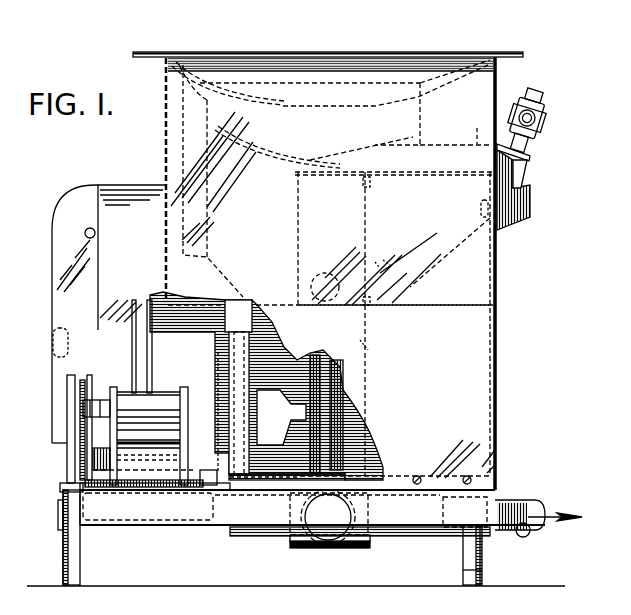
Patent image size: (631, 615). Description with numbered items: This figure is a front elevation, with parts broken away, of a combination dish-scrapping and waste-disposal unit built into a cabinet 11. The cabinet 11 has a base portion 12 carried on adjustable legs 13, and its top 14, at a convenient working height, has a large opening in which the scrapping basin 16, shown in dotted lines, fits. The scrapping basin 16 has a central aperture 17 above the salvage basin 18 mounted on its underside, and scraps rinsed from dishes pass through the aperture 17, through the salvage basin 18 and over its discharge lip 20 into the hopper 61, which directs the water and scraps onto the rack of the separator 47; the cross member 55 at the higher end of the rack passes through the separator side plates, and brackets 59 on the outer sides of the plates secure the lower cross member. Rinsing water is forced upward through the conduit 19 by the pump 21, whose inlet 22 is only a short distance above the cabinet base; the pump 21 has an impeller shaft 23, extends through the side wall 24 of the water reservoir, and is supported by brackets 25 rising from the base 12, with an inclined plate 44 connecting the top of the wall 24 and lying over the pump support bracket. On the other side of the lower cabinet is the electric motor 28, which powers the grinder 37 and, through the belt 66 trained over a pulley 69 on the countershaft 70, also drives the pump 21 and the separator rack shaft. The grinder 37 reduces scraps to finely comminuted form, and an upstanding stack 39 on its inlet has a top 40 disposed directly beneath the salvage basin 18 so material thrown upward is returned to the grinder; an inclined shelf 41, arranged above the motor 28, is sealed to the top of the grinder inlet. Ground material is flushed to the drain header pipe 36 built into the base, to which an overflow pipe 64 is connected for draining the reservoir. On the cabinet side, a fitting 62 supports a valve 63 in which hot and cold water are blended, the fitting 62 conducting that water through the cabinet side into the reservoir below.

The cabinet 11 is at (498, 358).
The base portion 12 is at (158, 518).
The adjustable legs 13 is at (63, 566).
The top of the cabinet 14 is at (485, 54).
The scrapping basin 16 is at (240, 96).
The central aperture 17 is at (306, 106).
The salvage basin 18 is at (317, 167).
The conduit 19 is at (225, 216).
The discharge lip 20 is at (430, 143).
The pump 21 is at (236, 380).
The inlet 22 is at (263, 478).
The impeller shaft 23 is at (90, 400).
The side wall 24 is at (222, 417).
The brackets 25 is at (177, 484).
The electric motor 28 is at (124, 303).
The drain header pipe 36 is at (328, 548).
The grinder 37 is at (373, 354).
The upstanding stack 39 is at (296, 222).
The top of the stack 40 is at (294, 173).
The inclined shelf 41 is at (452, 305).
The inclined plate 44 is at (213, 365).
The separator 47 is at (375, 220).
The cross member 55 is at (480, 214).
The brackets 59 is at (387, 265).
The hopper 61 is at (480, 128).
The fitting 62 is at (540, 160).
The valve 63 is at (542, 104).
The overflow pipe 64 is at (338, 400).
The belt 66 is at (72, 408).
The pulley 69 is at (58, 523).
The countershaft 70 is at (60, 502).